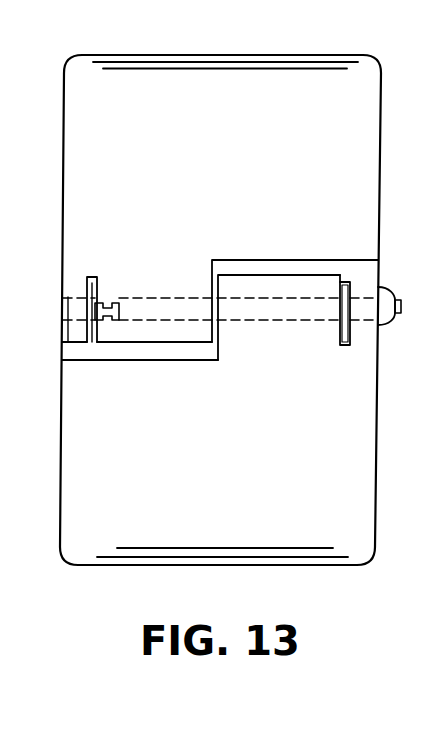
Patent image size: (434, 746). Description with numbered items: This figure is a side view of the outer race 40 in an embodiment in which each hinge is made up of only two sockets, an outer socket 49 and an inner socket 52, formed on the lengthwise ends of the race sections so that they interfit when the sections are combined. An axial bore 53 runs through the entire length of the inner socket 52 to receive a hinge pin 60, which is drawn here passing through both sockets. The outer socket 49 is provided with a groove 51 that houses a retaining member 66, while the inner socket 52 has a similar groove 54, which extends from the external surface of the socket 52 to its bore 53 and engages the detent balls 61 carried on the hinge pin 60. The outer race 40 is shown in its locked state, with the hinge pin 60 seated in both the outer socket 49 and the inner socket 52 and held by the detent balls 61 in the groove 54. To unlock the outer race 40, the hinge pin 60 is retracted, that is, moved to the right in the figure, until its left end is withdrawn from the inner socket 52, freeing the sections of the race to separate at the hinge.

The outer race 40 is at (384, 75).
The outer socket 49 is at (295, 274).
The groove 51 is at (343, 348).
The inner socket 52 is at (128, 343).
The axial bore 53 is at (190, 322).
The groove 54 is at (88, 278).
The hinge pin 60 is at (385, 338).
The detent ball 61 is at (97, 282).
The retaining member 66 is at (350, 277).